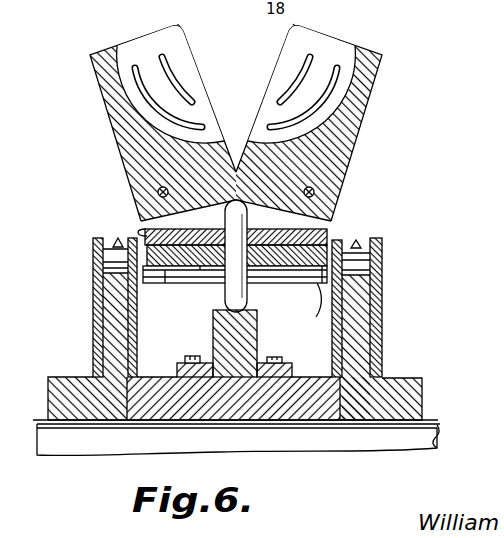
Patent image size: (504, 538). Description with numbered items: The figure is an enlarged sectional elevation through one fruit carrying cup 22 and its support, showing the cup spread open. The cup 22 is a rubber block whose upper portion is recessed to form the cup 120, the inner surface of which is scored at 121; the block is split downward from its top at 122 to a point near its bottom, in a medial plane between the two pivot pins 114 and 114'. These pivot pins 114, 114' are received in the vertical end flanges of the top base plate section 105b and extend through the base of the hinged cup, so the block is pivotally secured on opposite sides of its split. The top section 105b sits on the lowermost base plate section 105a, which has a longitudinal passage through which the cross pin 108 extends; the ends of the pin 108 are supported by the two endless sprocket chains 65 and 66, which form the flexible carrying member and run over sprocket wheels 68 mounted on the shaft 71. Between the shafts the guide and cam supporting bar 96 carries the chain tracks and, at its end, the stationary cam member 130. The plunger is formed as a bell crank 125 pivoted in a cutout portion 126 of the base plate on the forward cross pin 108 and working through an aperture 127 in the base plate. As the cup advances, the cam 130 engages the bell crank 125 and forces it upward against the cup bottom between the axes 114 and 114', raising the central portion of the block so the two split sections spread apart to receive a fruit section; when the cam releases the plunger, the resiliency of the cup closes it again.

The cup 22 is at (242, 116).
The endless sprocket chain 65 is at (382, 258).
The endless sprocket chain 66 is at (94, 262).
The sprocket wheel 68 is at (117, 241).
The shaft 71 is at (107, 443).
The guide and cam supporting bar 96 is at (290, 416).
The lowermost base plate section 105a is at (299, 309).
The top base plate section 105b is at (335, 236).
The pin 108 is at (331, 240).
The pivot pin 114 is at (314, 123).
The pivot pin 114' is at (143, 123).
The cup recess 120 is at (352, 62).
The scoring 121 is at (180, 80).
The split 122 is at (212, 101).
The bell crank 125 is at (249, 298).
The cutout portion 126 is at (207, 284).
The aperture 127 is at (143, 232).
The stationary cam member 130 is at (212, 332).